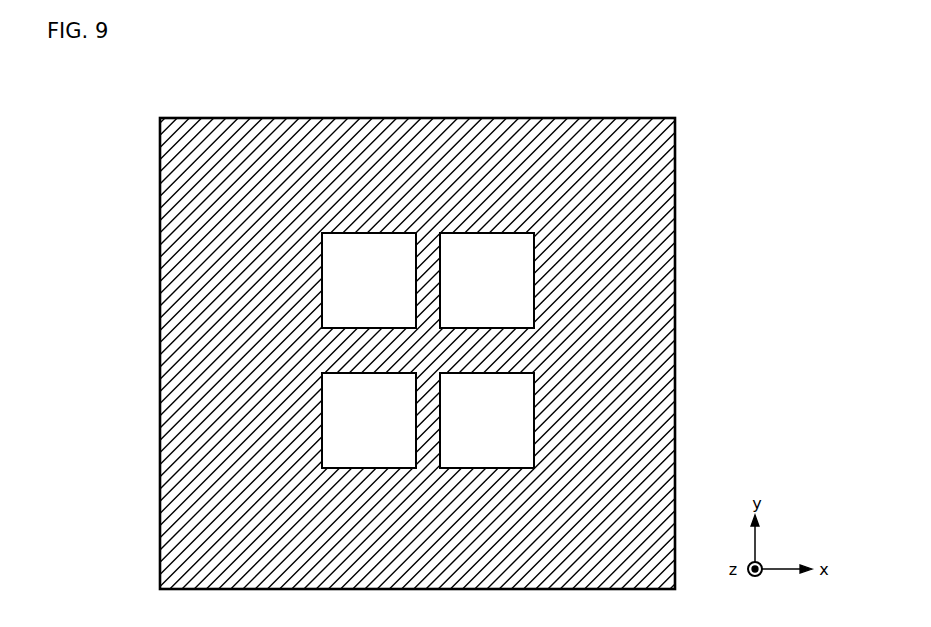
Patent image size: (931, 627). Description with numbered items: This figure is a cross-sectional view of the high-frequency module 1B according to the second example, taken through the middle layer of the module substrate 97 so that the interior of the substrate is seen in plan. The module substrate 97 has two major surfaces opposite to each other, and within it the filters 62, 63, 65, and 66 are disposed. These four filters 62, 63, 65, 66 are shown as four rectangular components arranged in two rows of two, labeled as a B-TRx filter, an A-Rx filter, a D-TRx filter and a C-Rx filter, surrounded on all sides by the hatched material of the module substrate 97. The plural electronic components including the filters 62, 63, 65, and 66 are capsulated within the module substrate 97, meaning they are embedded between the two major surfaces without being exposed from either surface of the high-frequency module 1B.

The high-frequency module 1B is at (735, 84).
The module substrate 97 is at (505, 117).
The filter 62 is at (355, 233).
The filter 63 is at (470, 233).
The filter 65 is at (382, 373).
The filter 66 is at (475, 373).